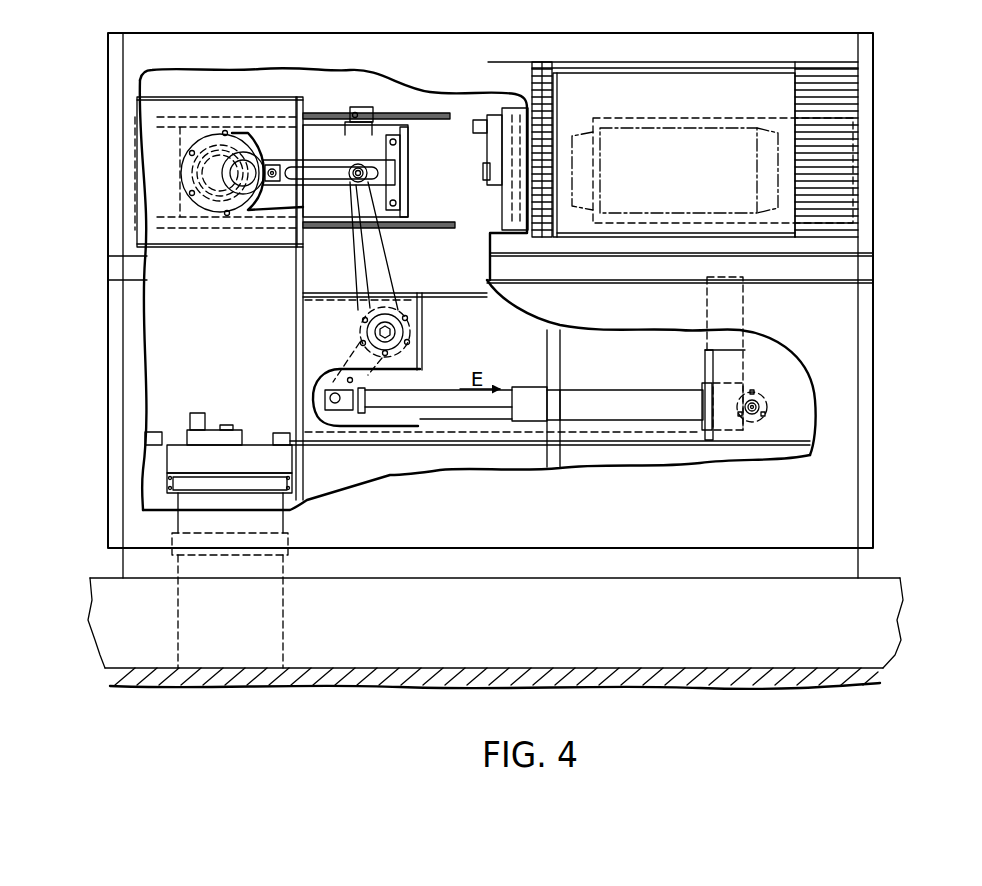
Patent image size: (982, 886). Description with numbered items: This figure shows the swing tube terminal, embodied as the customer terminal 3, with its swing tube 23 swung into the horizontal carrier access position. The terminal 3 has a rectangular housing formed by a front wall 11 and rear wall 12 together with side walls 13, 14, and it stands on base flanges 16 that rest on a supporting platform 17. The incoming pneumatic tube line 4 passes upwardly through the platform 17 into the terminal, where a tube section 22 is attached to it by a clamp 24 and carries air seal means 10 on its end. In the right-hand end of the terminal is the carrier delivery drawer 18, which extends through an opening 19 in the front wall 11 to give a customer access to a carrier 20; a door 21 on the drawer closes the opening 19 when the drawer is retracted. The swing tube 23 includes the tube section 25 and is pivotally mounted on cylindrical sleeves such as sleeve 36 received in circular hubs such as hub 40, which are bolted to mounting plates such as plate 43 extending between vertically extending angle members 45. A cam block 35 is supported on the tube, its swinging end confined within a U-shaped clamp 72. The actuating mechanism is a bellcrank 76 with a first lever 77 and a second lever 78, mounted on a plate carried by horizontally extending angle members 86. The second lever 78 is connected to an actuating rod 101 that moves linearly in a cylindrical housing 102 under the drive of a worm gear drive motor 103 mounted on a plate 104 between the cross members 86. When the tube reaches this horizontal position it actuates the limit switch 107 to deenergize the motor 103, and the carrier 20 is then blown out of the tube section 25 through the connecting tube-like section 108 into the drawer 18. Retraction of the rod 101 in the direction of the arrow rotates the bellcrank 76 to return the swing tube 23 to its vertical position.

The customer terminal 3 is at (99, 119).
The pneumatic tube line 4 is at (285, 637).
The air seal means 10 is at (180, 462).
The front wall 11 is at (800, 480).
The rear wall 12 is at (170, 335).
The side wall 13 is at (110, 289).
The side wall 14 is at (875, 303).
The base flanges 16 is at (603, 555).
The supporting platform 17 is at (683, 648).
The carrier delivery drawer 18 is at (752, 87).
The opening 19 is at (623, 78).
The carrier 20 is at (585, 127).
The door 21 is at (652, 190).
The pneumatic tube section 22 is at (175, 515).
The swing tube 23 is at (430, 108).
The clamp 24 is at (292, 536).
The tube section 25 is at (461, 190).
The cam block 35 is at (313, 181).
The cylindrical sleeve 36 is at (253, 158).
The circular hub 40 is at (218, 186).
The mounting plate 43 is at (163, 175).
The vertically extending angle members 45 is at (301, 346).
The U-shaped clamp 72 is at (403, 195).
The bellcrank 76 is at (413, 330).
The first lever 77 is at (383, 257).
The second lever 78 is at (363, 342).
The horizontally extending angle members 86 is at (453, 297).
The actuating rod 101 is at (430, 402).
The cylindrical housing 102 is at (612, 397).
The worm gear drive motor 103 is at (740, 343).
The plate 104 is at (778, 388).
The limit switch 107 is at (356, 107).
The connecting tube-like section 108 is at (567, 120).